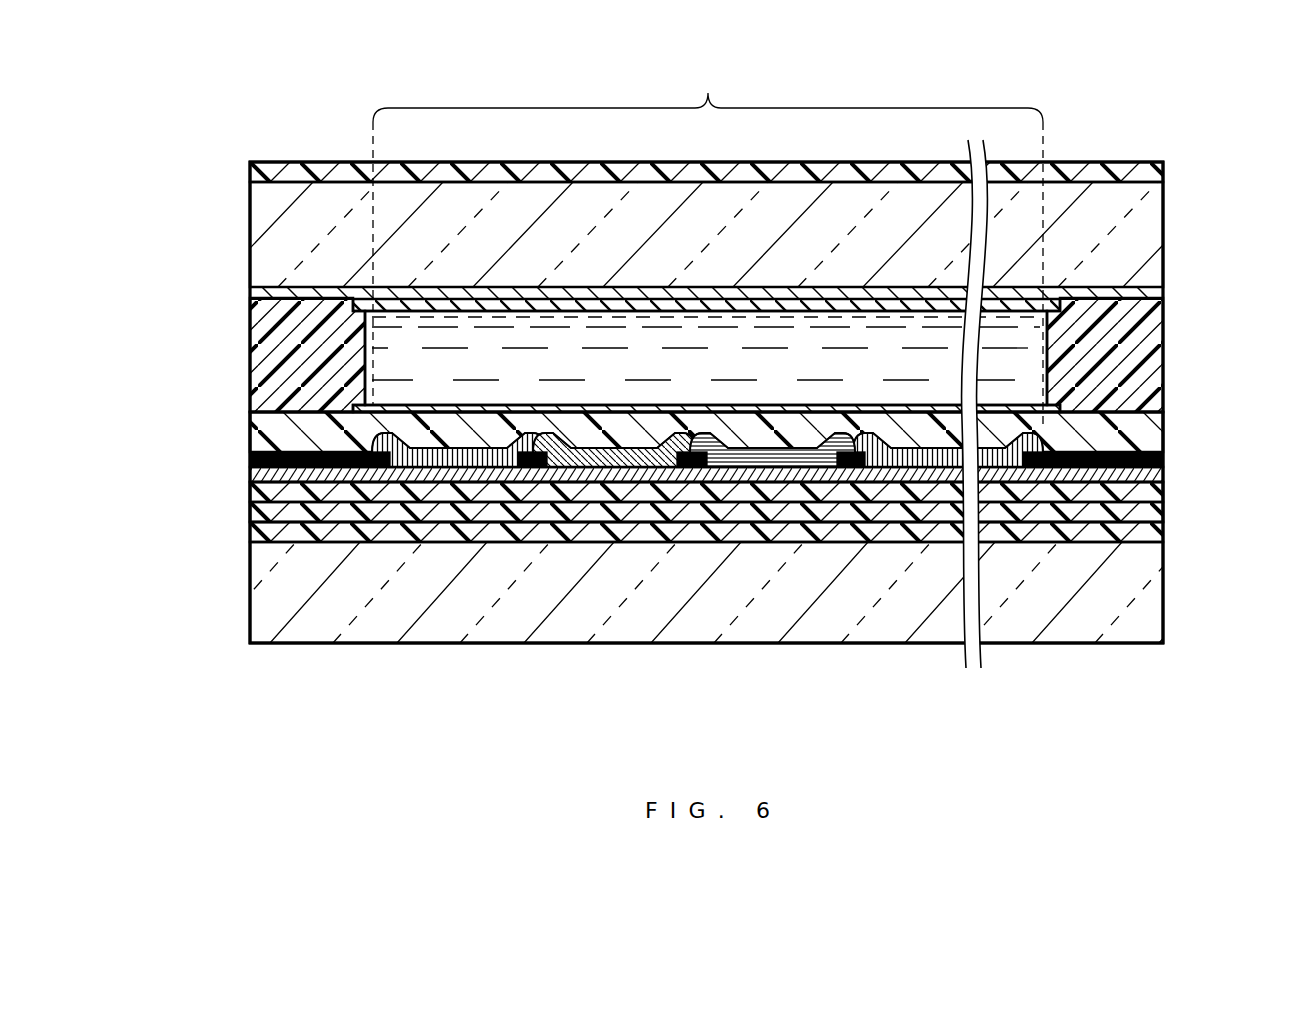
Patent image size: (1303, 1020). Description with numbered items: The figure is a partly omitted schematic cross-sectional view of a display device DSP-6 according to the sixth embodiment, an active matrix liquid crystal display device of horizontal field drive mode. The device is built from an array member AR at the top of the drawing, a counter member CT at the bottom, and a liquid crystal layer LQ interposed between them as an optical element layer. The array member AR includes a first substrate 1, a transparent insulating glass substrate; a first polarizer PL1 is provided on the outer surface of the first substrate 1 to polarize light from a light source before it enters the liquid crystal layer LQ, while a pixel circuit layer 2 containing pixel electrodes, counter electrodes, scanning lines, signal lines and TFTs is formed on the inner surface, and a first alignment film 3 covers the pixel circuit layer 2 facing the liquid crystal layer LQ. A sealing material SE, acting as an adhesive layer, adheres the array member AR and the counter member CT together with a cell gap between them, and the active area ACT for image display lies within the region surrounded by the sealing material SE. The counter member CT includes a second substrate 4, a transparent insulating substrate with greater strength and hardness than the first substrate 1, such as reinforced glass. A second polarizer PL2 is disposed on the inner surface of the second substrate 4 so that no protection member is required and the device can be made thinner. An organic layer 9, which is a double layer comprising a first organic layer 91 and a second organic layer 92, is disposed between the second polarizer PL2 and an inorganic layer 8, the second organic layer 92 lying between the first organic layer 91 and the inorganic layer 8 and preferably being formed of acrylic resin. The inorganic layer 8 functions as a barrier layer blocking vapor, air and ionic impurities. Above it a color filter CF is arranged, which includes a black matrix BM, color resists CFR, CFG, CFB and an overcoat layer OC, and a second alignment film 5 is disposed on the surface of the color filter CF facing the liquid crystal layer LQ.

The active area ACT is at (708, 247).
The display device DSP-6 is at (1128, 127).
The array member AR is at (228, 203).
The first polarizer PL1 is at (1155, 175).
The first substrate 1 is at (1153, 247).
The pixel circuit layer 2 is at (353, 292).
The sealing material SE is at (270, 358).
The first alignment film 3 is at (1050, 306).
The liquid crystal layer LQ is at (1030, 362).
The second alignment film 5 is at (1025, 400).
The color filter CF is at (1170, 420).
The overcoat layer OC is at (1150, 437).
The counter member CT is at (228, 477).
The inorganic layer 8 is at (1100, 472).
The second organic layer 92 is at (1150, 493).
The first organic layer 91 is at (1152, 515).
The organic layer 9 is at (1252, 475).
The second polarizer PL2 is at (1162, 533).
The second substrate 4 is at (1153, 600).
The black matrix BM is at (308, 460).
The color resist CFR is at (450, 462).
The color resist CFG is at (615, 462).
The color resist CFB is at (782, 460).